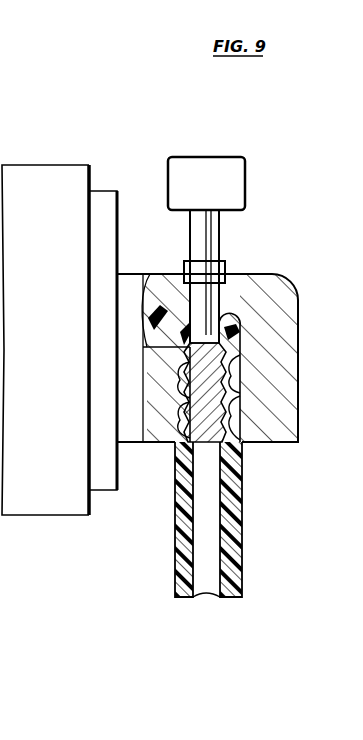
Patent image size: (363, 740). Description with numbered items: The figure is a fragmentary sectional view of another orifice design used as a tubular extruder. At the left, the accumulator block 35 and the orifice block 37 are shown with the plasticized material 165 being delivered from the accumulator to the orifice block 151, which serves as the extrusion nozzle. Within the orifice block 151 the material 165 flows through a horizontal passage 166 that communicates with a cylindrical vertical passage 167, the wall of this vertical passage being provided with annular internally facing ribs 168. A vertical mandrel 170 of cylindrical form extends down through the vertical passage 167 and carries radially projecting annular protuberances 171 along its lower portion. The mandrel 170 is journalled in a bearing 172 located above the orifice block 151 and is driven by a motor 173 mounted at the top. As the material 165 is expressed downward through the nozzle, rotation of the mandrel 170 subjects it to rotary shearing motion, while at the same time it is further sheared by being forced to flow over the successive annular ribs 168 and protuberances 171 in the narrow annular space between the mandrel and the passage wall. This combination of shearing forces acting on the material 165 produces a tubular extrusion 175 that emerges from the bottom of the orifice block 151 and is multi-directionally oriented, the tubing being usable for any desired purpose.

The accumulator block 35 is at (40, 500).
The orifice block 37 is at (110, 482).
The orifice block 151 is at (273, 290).
The plasticized material 165 is at (165, 298).
The horizontal passage 166 is at (158, 365).
The cylindrical vertical passage 167 is at (235, 393).
The annular internally facing ribs 168 is at (176, 375).
The vertical mandrel 170 is at (210, 331).
The annular protuberances 171 is at (228, 440).
The bearing 172 is at (221, 269).
The motor 173 is at (243, 173).
The tubular extrusion 175 is at (236, 552).